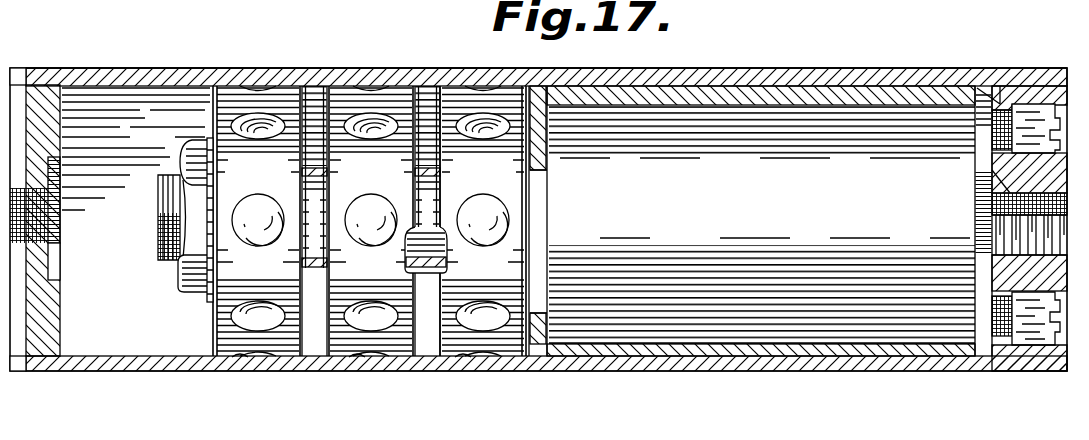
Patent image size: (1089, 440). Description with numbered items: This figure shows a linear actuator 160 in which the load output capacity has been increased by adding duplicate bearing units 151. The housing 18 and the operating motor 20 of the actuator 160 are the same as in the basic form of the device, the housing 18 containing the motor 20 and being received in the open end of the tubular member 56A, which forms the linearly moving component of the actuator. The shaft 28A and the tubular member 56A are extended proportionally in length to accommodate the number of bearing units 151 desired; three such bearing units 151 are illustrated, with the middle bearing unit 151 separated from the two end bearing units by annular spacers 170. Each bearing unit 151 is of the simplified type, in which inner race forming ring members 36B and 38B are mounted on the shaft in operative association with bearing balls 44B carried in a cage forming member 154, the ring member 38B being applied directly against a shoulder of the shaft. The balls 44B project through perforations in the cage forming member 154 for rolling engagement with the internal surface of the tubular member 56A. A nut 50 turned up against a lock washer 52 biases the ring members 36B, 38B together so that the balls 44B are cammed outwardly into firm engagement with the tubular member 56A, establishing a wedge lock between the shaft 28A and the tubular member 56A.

The housing 18 is at (913, 362).
The operating motor 20 is at (858, 323).
The shaft 28A is at (540, 204).
The inner race forming ring member 36B is at (447, 252).
The inner race forming ring member 38B is at (405, 262).
The bearing balls 44B is at (249, 214).
The nut 50 is at (183, 152).
The lock washer 52 is at (207, 291).
The tubular member 56A is at (932, 72).
The bearing unit 151 is at (240, 362).
The cage forming member 154 is at (218, 306).
The actuator 160 is at (883, 62).
The annular spacers 170 is at (314, 168).